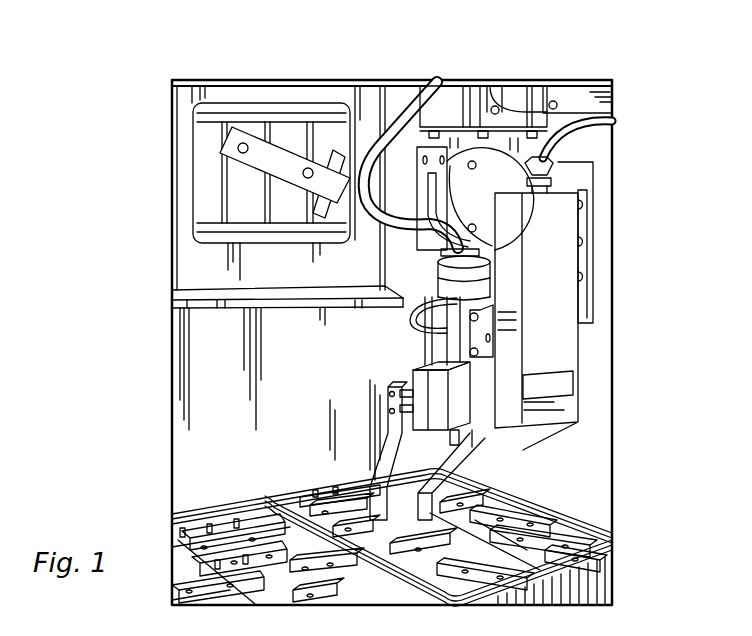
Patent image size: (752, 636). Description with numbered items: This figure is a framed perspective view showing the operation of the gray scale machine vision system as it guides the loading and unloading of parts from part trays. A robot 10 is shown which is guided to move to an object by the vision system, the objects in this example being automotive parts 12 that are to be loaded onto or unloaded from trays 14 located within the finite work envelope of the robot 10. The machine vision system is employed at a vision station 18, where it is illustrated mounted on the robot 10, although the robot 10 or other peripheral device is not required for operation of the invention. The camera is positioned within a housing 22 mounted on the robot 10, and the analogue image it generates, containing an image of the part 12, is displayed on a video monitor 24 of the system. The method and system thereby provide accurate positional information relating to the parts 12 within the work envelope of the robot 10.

The robot 10 is at (596, 257).
The automotive parts 12 is at (249, 543).
The trays 14 is at (254, 527).
The vision station 18 is at (172, 348).
The housing 22 is at (582, 354).
The video monitor 24 is at (377, 93).